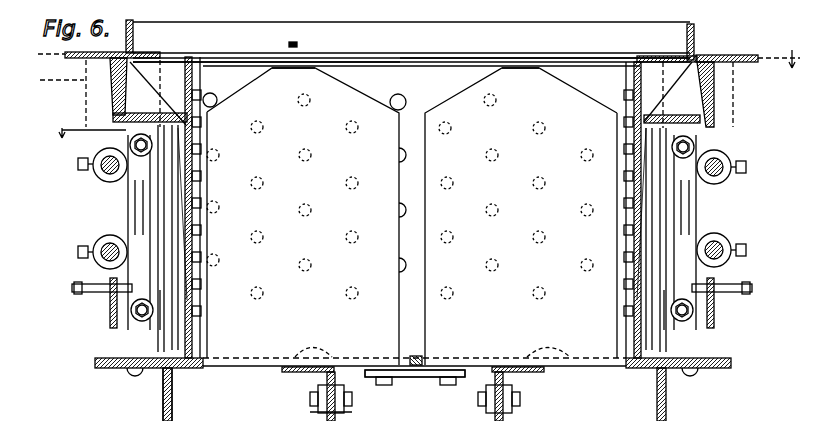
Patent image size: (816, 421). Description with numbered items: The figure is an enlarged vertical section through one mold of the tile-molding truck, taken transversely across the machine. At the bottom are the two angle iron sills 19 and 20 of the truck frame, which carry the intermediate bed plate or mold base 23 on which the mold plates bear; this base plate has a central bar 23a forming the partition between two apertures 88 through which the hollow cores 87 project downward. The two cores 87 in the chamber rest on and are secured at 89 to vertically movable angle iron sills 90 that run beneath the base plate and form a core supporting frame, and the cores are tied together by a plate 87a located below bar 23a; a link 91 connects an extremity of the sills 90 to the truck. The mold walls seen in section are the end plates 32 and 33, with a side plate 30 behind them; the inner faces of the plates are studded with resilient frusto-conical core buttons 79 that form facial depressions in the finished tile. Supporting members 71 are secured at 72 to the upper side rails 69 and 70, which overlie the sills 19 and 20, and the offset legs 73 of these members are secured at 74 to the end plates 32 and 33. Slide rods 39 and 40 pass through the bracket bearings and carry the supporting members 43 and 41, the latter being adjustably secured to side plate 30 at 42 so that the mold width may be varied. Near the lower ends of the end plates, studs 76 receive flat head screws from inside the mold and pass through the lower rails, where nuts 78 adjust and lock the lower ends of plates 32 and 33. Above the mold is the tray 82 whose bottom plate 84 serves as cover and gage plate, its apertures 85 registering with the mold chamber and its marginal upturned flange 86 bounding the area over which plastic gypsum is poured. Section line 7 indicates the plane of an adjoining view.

The section line 7- 7 is at (420, 88).
The angle iron sill 19 is at (163, 385).
The angle iron sill 20 is at (667, 396).
The intermediate bed plate or mold base 23 is at (180, 394).
The bar of base plate 23a is at (421, 356).
The vertical side plate 30 is at (405, 79).
The end plate 32 is at (194, 77).
The end plate 33 is at (634, 78).
The slide rod 39 is at (98, 170).
The slide rod 40 is at (100, 247).
The supporting member 41 is at (138, 206).
The adjustable connection 42 is at (129, 143).
The supporting member 43 is at (92, 143).
The upper side rail 69 is at (108, 66).
The upper side rail 70 is at (724, 60).
The supporting member 71 is at (134, 108).
The attachment of supporting member to rail 72 is at (110, 98).
The offset leg 73 is at (196, 190).
The attachment of offset leg to end plate 74 is at (193, 143).
The stud 76 is at (161, 300).
The nut 78 is at (108, 297).
The core button 79 is at (391, 96).
The tray 82 is at (518, 33).
The bottom plate of tray 84 is at (607, 61).
The aperture 85 is at (340, 57).
The upturned flange 86 is at (294, 42).
The hollow core 87 is at (398, 196).
The tie plate 87a is at (480, 378).
The aperture in base plate 88 is at (205, 370).
The core securing point 89 is at (322, 348).
The angle iron sill 90 is at (336, 378).
The link 91 is at (318, 411).